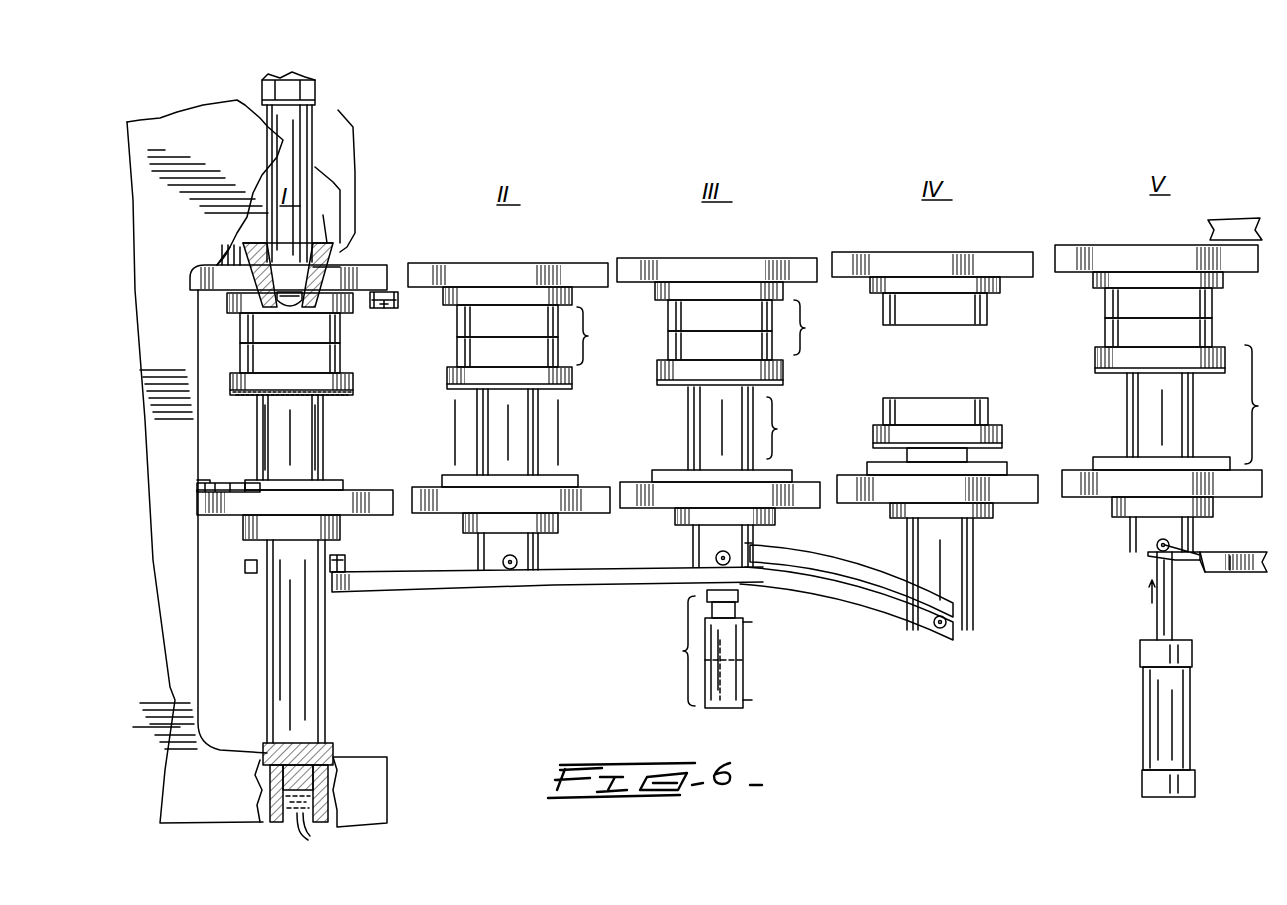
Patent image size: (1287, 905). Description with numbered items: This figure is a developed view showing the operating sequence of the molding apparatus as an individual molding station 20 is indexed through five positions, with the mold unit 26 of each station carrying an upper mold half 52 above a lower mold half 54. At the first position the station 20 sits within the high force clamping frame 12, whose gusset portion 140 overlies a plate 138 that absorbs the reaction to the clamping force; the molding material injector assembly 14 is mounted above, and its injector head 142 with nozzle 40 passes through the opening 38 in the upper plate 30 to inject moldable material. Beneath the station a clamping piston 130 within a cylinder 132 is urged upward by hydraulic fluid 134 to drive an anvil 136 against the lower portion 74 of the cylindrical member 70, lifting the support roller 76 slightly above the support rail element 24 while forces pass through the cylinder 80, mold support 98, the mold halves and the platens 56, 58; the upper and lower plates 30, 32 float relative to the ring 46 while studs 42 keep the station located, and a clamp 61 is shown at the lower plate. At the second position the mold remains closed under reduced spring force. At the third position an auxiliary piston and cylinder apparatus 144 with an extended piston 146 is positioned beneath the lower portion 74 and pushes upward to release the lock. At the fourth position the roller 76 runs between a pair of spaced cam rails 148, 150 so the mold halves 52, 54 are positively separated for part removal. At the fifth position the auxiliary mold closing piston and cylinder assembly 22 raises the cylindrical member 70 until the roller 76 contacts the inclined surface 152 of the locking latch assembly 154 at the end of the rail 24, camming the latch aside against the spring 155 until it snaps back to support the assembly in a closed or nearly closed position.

The high force clamping frame 12 is at (182, 358).
The molding material injector assembly 14 is at (355, 181).
The individual molding station 20 is at (341, 460).
The auxiliary mold closing piston and cylinder assembly 22 is at (1210, 725).
The support rail element 24 is at (362, 580).
The mold unit 26 is at (705, 332).
The upper plate 30 is at (190, 288).
The lower plate 32 is at (373, 500).
The opening 38 is at (333, 262).
The nozzle 40 is at (304, 290).
The studs 42 is at (385, 310).
The ring 46 is at (388, 309).
The upper mold half 52 is at (297, 340).
The lower mold half 54 is at (297, 363).
The platen 56 is at (235, 310).
The platen 58 is at (353, 380).
The clamp 61 is at (260, 486).
The cylindrical member 70 is at (250, 443).
The lower portion 74 is at (260, 555).
The support roller 76 is at (343, 558).
The cylinder 80 is at (297, 477).
The mold support 98 is at (351, 395).
The clamping piston 130 is at (322, 748).
The cylinder 132 is at (270, 785).
The hydraulic fluid 134 is at (290, 825).
The anvil 136 is at (268, 655).
The plate 138 is at (217, 243).
The gusset portion 140 is at (252, 169).
The injector head 142 is at (298, 134).
The auxiliary piston and cylinder apparatus 144 is at (695, 652).
The extended piston 146 is at (733, 608).
The cam rail 148 is at (830, 568).
The cam rail 150 is at (848, 605).
The inclined surface 152 is at (1175, 575).
The locking latch assembly 154 is at (1195, 553).
The spring 155 is at (1235, 572).